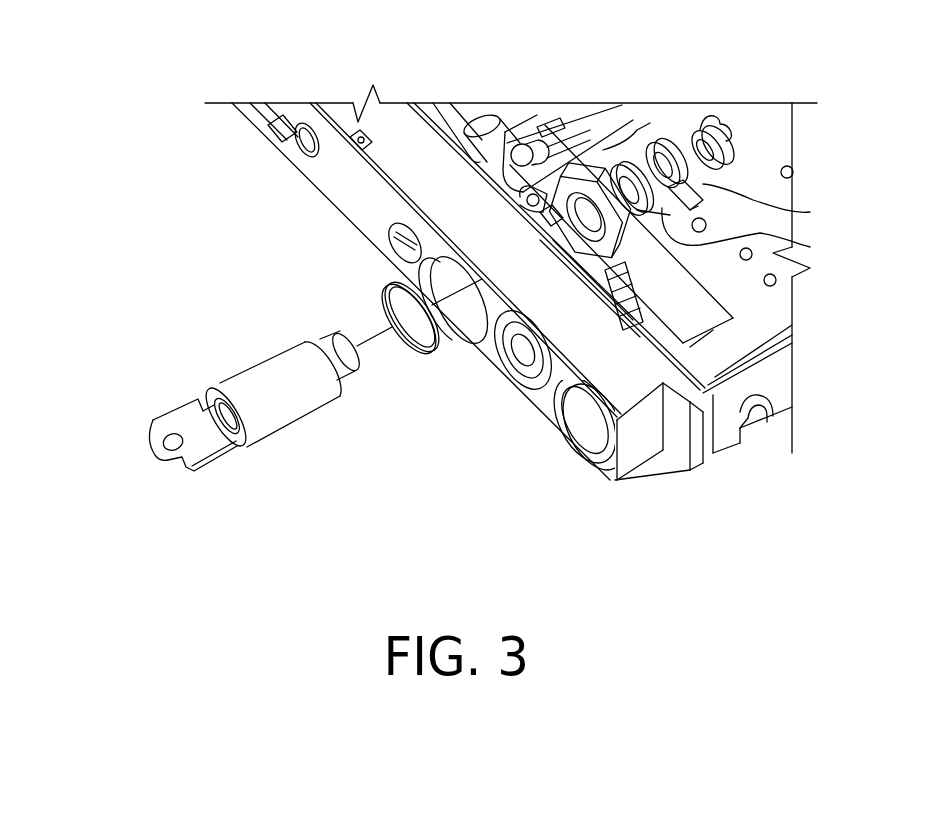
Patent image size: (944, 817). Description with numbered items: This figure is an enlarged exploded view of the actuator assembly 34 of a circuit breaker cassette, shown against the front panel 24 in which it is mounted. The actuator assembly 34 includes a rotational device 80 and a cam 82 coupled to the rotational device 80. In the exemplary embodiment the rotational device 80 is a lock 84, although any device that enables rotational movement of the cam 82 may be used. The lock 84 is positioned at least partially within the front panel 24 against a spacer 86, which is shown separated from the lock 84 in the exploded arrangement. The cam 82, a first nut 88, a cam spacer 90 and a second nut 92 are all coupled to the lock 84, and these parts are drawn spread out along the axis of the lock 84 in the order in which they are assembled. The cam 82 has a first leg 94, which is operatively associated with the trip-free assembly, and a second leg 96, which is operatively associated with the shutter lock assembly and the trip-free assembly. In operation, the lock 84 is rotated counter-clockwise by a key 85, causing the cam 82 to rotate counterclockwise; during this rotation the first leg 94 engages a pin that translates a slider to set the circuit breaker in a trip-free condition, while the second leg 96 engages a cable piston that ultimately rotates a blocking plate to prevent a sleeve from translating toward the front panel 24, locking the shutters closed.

The front panel 24 is at (352, 187).
The actuator assembly 34 is at (115, 353).
The rotational device 80 is at (303, 330).
The cam 82 is at (657, 136).
The lock 84 is at (265, 359).
The key 85 is at (205, 446).
The spacer 86 is at (436, 352).
The first nut 88 is at (637, 320).
The cam spacer 90 is at (611, 173).
The second nut 92 is at (706, 126).
The first leg 94 is at (751, 234).
The second leg 96 is at (772, 205).